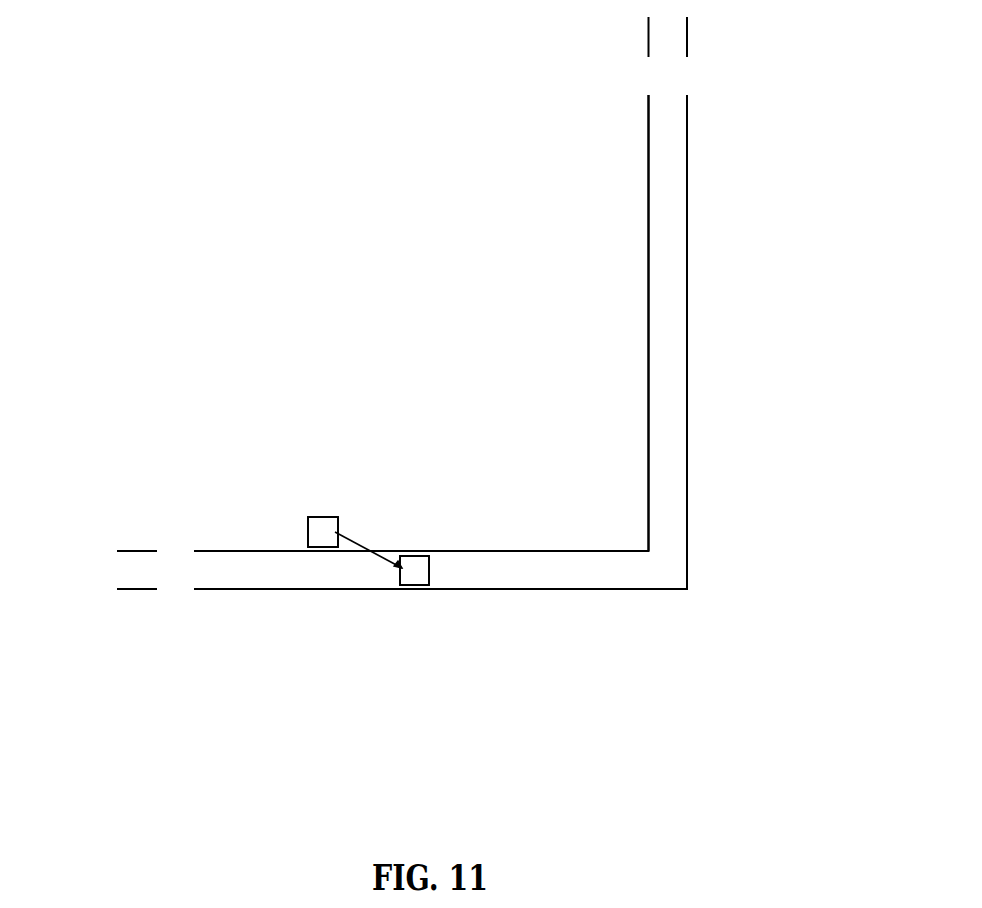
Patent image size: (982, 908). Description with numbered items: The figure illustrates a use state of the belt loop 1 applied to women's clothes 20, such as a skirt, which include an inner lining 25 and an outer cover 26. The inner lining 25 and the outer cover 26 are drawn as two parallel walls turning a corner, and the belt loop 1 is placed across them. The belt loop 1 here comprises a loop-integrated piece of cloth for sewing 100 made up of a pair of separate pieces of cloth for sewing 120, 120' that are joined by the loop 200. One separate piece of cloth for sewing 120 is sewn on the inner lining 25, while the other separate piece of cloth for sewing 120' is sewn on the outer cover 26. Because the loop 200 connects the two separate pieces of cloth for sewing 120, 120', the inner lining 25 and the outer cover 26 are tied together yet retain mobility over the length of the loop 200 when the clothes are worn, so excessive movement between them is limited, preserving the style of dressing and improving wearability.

The women's clothes 20 is at (108, 65).
The inner lining 25 is at (523, 303).
The outer cover 26 is at (668, 288).
The loop 200 is at (368, 550).
The loop-integrated piece of cloth for sewing 100 is at (206, 676).
The separate piece of cloth for sewing 120 is at (275, 606).
The separate piece of cloth for sewing 120' is at (332, 666).
The belt loop 1 is at (424, 612).